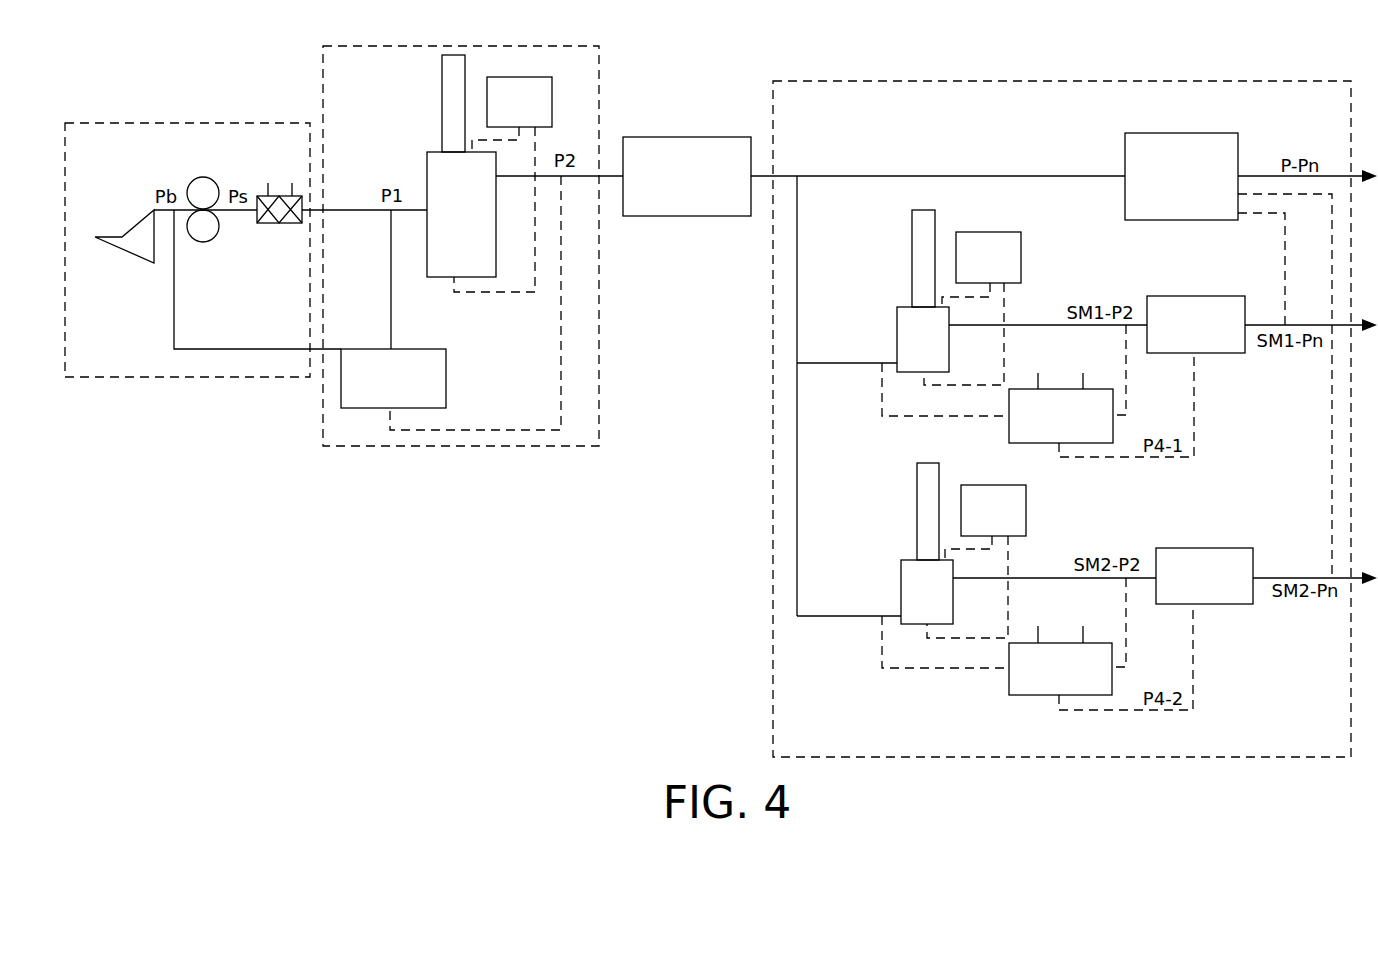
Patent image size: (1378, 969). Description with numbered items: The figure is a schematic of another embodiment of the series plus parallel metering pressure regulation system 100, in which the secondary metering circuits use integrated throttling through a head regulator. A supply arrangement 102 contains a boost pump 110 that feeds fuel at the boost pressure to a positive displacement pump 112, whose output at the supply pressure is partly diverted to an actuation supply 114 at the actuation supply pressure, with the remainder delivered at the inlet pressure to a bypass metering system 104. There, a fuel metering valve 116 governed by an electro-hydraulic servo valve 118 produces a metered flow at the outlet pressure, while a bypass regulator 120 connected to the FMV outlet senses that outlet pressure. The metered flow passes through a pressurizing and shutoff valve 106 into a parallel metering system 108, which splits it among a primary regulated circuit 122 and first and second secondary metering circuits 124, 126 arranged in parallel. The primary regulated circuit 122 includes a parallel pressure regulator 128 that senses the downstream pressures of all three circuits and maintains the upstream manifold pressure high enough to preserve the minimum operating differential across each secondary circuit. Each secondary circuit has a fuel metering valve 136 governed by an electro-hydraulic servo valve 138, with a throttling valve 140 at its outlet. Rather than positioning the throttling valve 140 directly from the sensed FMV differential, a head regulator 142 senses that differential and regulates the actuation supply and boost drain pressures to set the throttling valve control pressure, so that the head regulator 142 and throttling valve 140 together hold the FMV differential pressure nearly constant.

The series plus parallel metering pressure regulation system 100 is at (220, 569).
The supply arrangement 102 is at (125, 378).
The bypass metering system 104 is at (498, 447).
The pressurizing and shutoff valve 106 is at (682, 216).
The parallel metering system 108 is at (773, 713).
The boost pump 110 is at (142, 217).
The positive displacement pump 112 is at (203, 178).
The actuation supply 114 is at (268, 224).
The fuel metering valve 116 is at (440, 277).
The electro-hydraulic servo valve 118 is at (552, 97).
The bypass regulator 120 is at (446, 369).
The primary regulated circuit 122 is at (876, 162).
The first secondary metering circuit 124 is at (864, 301).
The second secondary metering circuit 126 is at (872, 551).
The parallel pressure regulator 128 is at (1188, 133).
The fuel metering valve 136 is at (907, 372).
The electro-hydraulic servo valve 138 is at (1021, 257).
The throttling valve 140 is at (1177, 296).
The head regulator 142 is at (1009, 430).